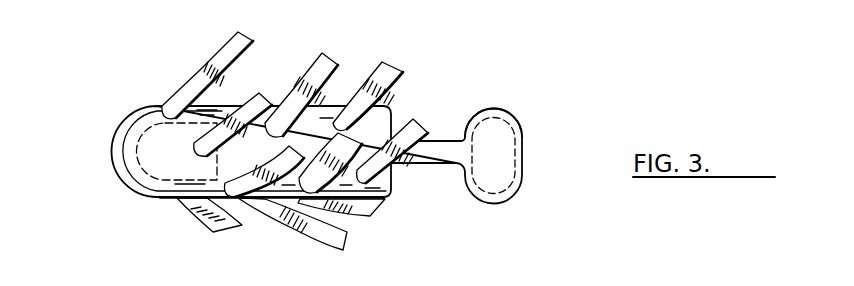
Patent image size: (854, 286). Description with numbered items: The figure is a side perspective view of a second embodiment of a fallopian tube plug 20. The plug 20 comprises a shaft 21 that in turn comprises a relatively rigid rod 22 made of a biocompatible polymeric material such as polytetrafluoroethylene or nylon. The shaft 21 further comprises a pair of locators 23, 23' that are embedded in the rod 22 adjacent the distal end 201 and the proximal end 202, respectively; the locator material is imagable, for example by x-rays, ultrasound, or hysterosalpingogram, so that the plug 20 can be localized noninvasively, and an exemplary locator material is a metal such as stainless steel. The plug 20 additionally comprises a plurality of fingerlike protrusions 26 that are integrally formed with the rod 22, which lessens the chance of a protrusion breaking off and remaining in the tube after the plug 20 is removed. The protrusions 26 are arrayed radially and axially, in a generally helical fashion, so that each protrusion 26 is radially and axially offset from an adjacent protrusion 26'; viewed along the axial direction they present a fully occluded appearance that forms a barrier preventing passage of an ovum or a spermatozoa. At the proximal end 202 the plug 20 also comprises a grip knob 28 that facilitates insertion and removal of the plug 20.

The fallopian tube plug 20 is at (128, 66).
The distal end 201 is at (121, 150).
The proximal end 202 is at (523, 177).
The locator 23 is at (162, 181).
The locator 23' is at (526, 154).
The fingerlike protrusion 26 is at (207, 72).
The adjacent protrusion 26' is at (245, 98).
The grip knob 28 is at (507, 113).
The shaft 21 is at (281, 233).
The rod 22 is at (254, 191).